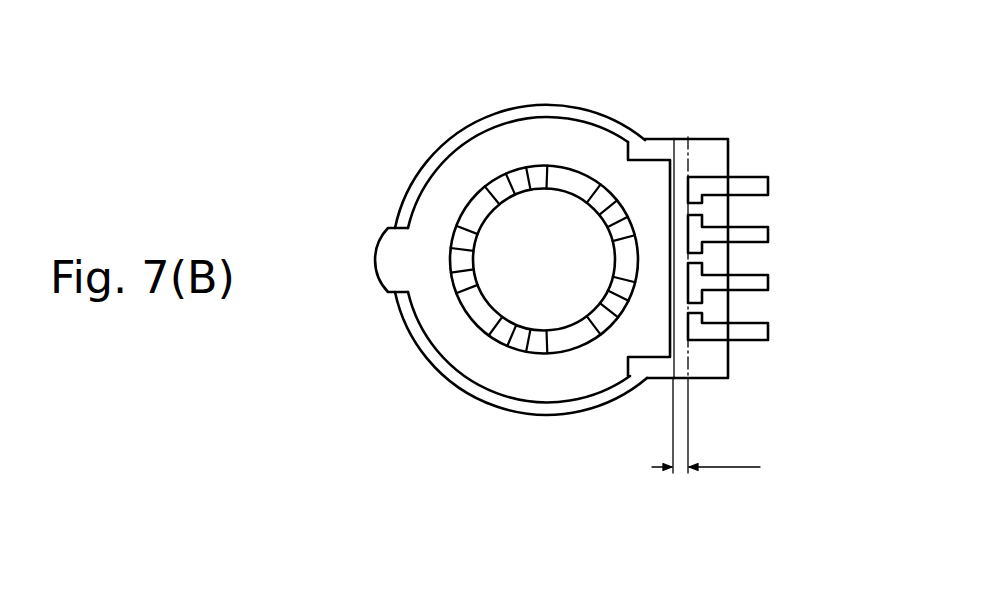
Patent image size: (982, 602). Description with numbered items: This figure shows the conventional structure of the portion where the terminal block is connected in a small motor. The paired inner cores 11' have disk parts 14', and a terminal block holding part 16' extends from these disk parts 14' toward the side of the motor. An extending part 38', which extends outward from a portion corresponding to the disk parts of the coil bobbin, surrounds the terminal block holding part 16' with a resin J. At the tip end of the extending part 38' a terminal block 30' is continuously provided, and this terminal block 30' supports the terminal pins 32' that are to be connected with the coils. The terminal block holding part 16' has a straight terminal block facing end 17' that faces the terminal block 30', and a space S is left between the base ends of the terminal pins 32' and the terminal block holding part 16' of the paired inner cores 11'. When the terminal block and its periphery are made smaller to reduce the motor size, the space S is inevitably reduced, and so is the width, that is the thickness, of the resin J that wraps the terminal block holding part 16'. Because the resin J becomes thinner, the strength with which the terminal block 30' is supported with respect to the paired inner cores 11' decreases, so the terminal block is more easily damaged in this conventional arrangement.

The paired inner cores 11' is at (511, 218).
The disk parts 14' is at (519, 212).
The terminal block holding part 16' is at (652, 199).
The resin J is at (675, 150).
The terminal pins 32' is at (752, 181).
The terminal block facing end 17' is at (766, 258).
The terminal block 30' is at (768, 258).
The extending part 38' is at (623, 336).
The space S is at (706, 425).